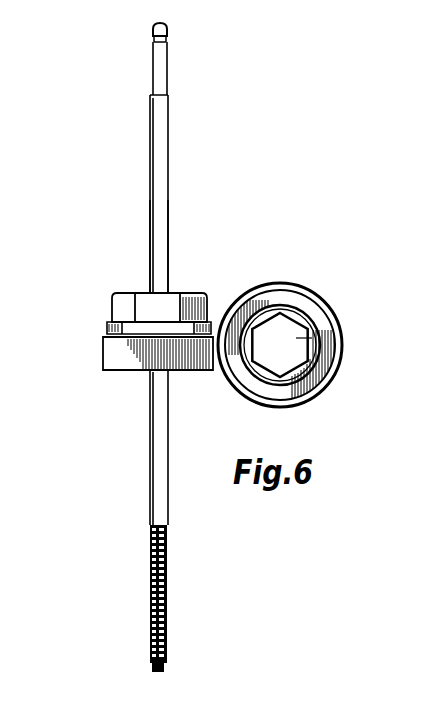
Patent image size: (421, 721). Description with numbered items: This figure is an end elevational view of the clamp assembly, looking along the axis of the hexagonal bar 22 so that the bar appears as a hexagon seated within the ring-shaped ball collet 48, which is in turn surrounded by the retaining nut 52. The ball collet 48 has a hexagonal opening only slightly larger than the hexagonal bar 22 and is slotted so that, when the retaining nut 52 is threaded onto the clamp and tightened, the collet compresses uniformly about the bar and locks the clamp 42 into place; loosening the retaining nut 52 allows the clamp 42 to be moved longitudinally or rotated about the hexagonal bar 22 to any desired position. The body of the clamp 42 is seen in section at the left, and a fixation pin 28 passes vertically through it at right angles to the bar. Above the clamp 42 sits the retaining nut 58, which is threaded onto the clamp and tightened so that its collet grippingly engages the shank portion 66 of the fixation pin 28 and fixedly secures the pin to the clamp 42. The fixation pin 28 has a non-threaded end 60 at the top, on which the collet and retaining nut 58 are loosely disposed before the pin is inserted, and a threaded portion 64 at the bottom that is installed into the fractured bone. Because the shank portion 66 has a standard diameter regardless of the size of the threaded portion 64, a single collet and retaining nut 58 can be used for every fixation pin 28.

The non-threaded end 60 is at (168, 65).
The fixation pin 28 is at (168, 162).
The shank portion 66 is at (168, 252).
The retaining nut 58 is at (120, 305).
The clamp 42 is at (108, 357).
The retaining nut 52 is at (302, 292).
The ball collet 48 is at (317, 388).
The hexagonal bar 22 is at (335, 332).
The threaded portion 64 is at (166, 608).